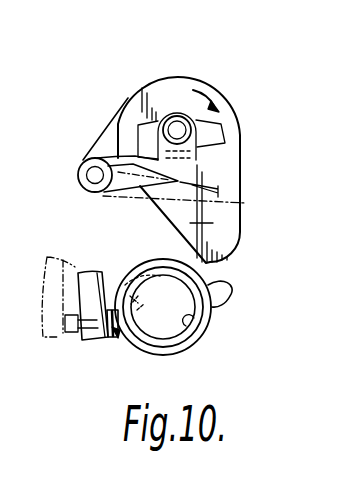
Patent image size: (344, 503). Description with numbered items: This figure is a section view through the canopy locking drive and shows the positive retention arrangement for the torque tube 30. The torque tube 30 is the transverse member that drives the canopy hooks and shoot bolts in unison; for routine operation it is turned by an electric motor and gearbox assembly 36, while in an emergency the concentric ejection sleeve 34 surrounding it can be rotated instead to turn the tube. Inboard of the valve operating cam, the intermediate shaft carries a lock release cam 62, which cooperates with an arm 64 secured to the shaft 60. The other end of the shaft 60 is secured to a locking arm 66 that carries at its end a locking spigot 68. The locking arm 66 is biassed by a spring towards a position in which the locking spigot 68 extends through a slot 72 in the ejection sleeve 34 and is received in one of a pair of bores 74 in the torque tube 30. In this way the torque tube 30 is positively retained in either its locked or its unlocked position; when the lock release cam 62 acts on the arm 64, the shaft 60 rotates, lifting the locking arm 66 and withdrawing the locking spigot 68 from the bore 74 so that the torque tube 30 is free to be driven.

The torque tube 30 is at (187, 323).
The ejection sleeve 34 is at (228, 297).
The electric motor and gearbox assembly 36 is at (148, 71).
The shaft 60 is at (95, 175).
The lock release cam 62 is at (214, 147).
The arm 64 is at (238, 200).
The locking arm 66 is at (48, 270).
The locking spigot 68 is at (100, 350).
The slot 72 is at (125, 285).
The bores 74 is at (137, 262).